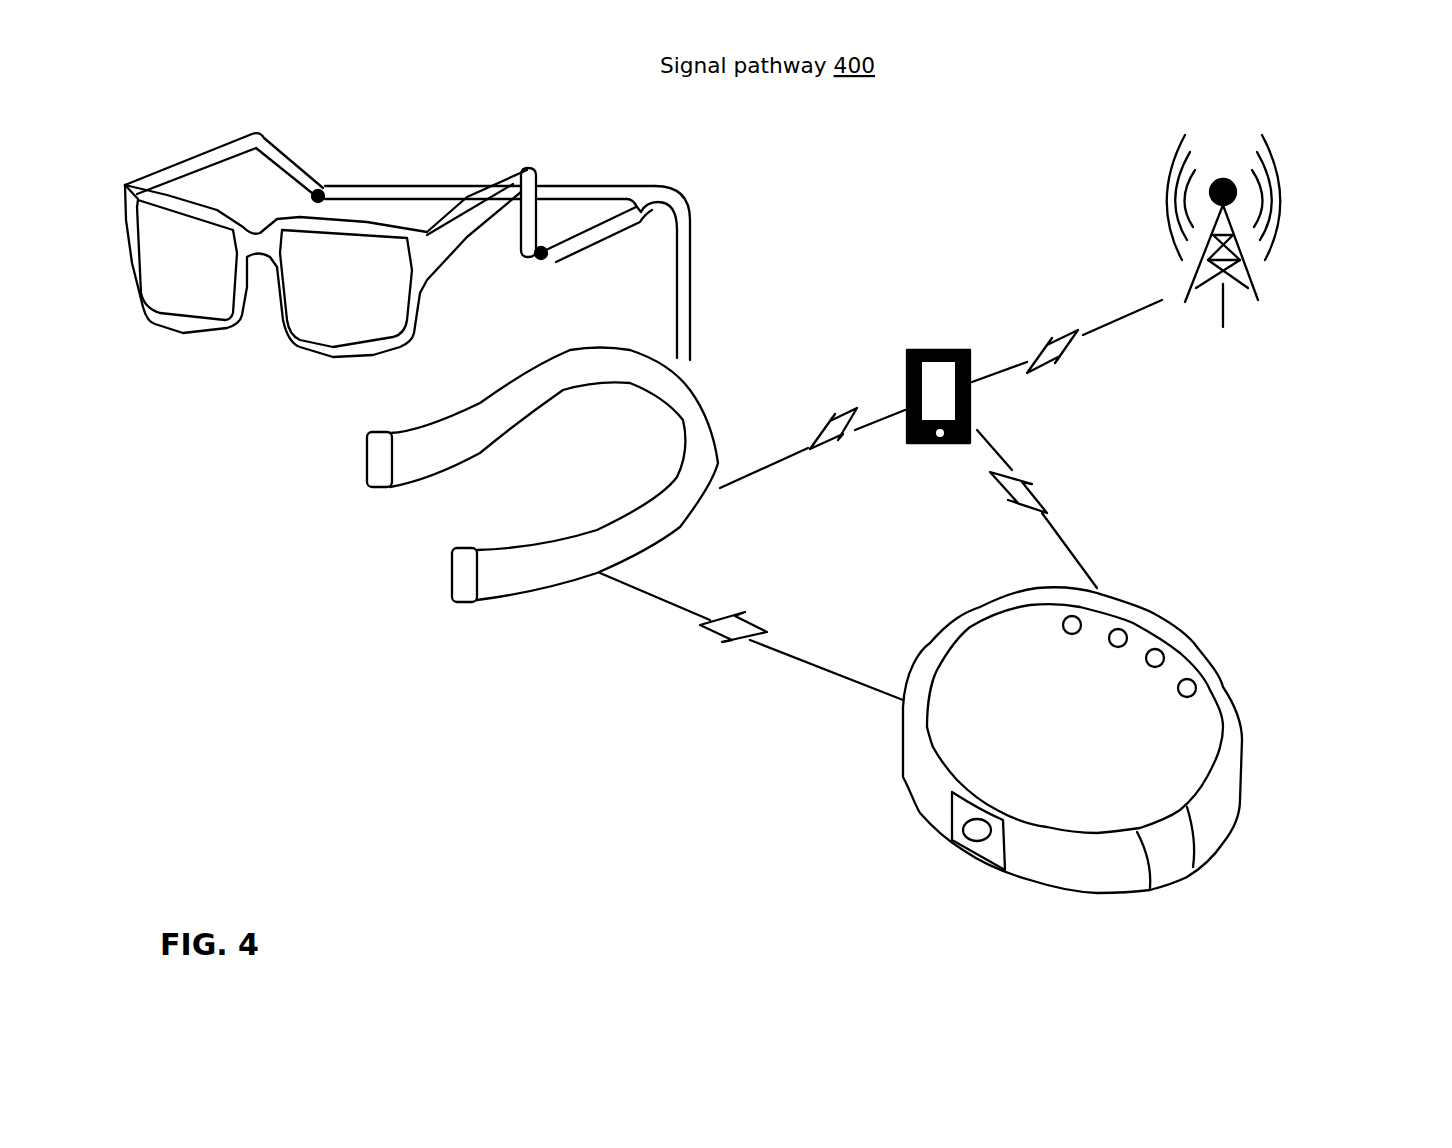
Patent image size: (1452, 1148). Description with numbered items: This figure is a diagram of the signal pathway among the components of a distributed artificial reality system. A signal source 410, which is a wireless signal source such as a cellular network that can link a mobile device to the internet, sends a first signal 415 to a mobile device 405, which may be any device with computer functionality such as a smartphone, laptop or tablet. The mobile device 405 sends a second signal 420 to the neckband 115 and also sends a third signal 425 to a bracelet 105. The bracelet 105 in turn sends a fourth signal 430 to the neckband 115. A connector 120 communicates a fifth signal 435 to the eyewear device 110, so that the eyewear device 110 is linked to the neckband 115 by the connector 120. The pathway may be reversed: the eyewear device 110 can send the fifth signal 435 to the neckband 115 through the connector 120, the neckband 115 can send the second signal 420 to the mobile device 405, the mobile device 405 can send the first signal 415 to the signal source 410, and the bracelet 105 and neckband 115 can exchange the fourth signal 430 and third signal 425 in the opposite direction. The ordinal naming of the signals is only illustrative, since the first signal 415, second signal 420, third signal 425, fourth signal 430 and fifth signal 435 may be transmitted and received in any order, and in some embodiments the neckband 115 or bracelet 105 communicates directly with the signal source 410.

The bracelet 105 is at (1285, 898).
The eyewear device 110 is at (94, 218).
The neckband 115 is at (447, 603).
The connector 120 is at (692, 212).
The mobile device 405 is at (907, 347).
The signal source 410 is at (1224, 267).
The first signal 415 is at (1047, 320).
The second signal 420 is at (815, 455).
The third signal 425 is at (1018, 457).
The fourth signal 430 is at (707, 643).
The fifth signal 435 is at (692, 337).